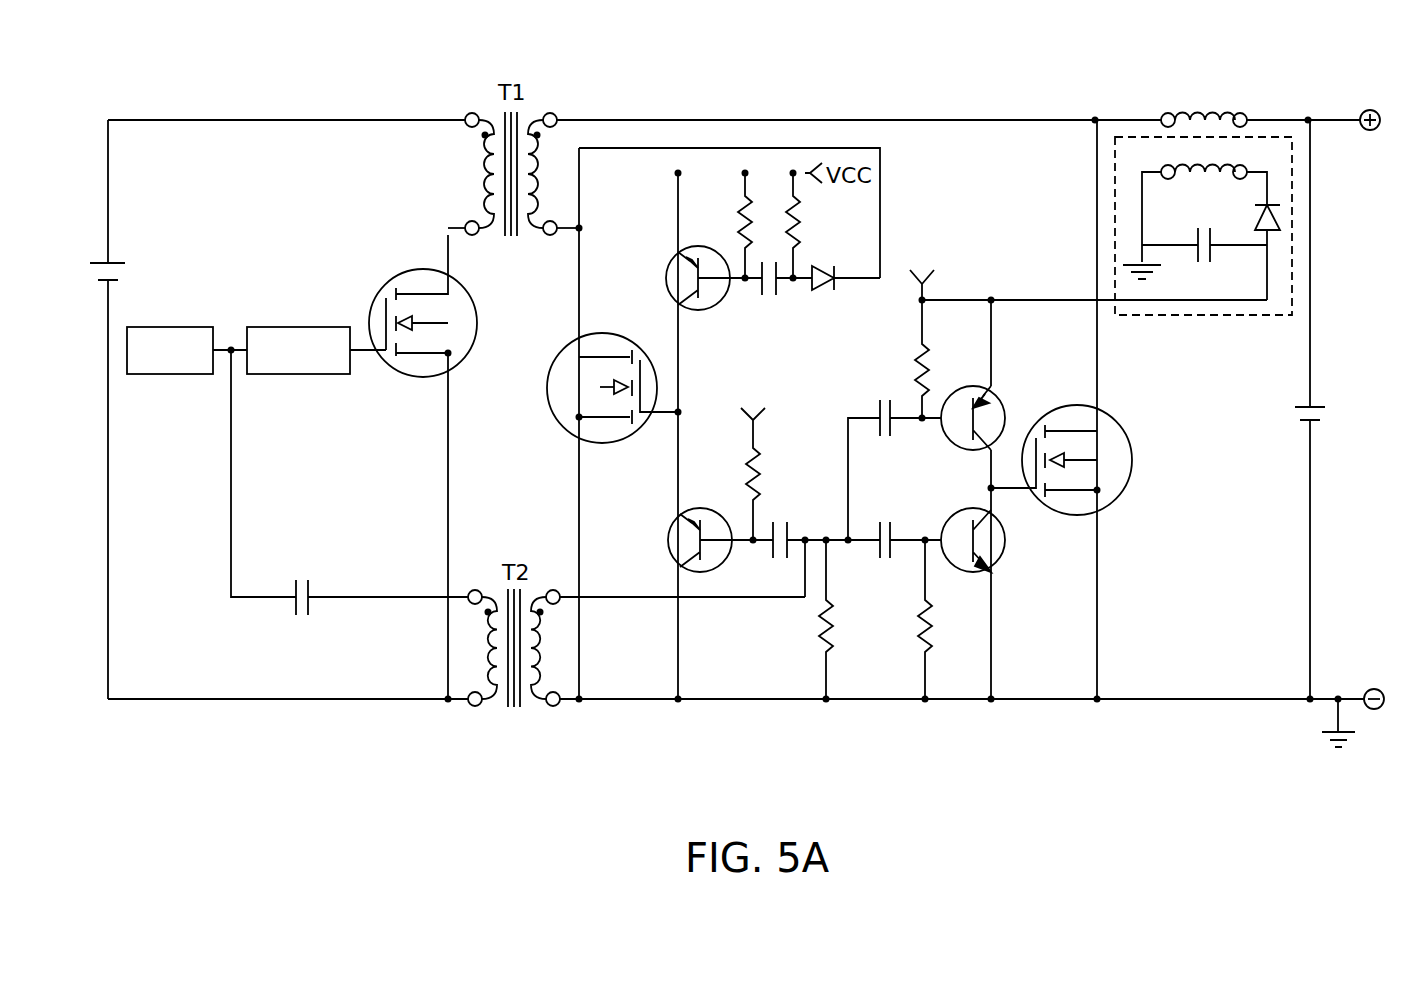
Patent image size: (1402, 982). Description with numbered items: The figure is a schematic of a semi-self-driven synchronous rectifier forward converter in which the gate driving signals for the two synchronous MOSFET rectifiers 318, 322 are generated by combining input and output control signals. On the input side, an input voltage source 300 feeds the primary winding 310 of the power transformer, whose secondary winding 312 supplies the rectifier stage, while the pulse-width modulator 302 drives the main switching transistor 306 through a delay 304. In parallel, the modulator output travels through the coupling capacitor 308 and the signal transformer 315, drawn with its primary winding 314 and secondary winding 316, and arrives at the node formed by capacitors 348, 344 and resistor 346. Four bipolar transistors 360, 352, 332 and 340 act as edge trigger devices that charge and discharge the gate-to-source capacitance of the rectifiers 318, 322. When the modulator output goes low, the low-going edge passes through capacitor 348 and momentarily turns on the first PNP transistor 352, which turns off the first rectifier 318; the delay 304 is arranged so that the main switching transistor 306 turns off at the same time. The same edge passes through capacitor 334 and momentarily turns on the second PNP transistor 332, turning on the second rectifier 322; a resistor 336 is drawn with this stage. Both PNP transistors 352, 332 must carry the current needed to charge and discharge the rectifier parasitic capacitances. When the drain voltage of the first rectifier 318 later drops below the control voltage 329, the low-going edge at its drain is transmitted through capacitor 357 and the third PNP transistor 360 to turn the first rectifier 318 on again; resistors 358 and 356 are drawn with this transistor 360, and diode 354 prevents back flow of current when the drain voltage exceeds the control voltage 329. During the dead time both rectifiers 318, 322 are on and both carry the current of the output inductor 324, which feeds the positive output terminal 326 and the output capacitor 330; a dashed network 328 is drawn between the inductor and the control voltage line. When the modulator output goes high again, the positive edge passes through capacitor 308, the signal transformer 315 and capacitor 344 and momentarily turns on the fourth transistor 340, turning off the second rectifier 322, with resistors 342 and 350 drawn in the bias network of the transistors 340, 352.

The input voltage source VIN 300 is at (135, 265).
The PWM 302 is at (167, 380).
The delay 304 is at (298, 380).
The transistor Q1 306 is at (400, 266).
The capacitor C1 308 is at (300, 624).
The primary winding of transformer T1 310 is at (466, 106).
The secondary winding of transformer T1 312 is at (554, 106).
The primary winding of transformer T2 314 is at (470, 714).
The transformer T2 315 is at (514, 714).
The secondary winding of transformer T2 316 is at (560, 714).
The synchronous MOSFET rectifier Q2 318 is at (570, 440).
The synchronous MOSFET rectifier Q3 322 is at (1110, 406).
The inductor 324 is at (1161, 106).
The positive output terminal 326 is at (1362, 106).
The auxiliary winding circuit 328 is at (1113, 178).
The control voltage Vcc 329 is at (1262, 304).
The output capacitor CO 330 is at (1320, 394).
The PNP transistor Q6 332 is at (1000, 388).
The capacitor 334 is at (878, 446).
The resistor 336 is at (938, 356).
The transistor Q7 340 is at (1006, 568).
The resistor 342 is at (912, 645).
The capacitor 344 is at (882, 565).
The resistor 346 is at (812, 645).
The capacitor 348 is at (782, 512).
The resistor 350 is at (762, 455).
The PNP transistor Q5 352 is at (673, 514).
The diode 354 is at (840, 295).
The resistor 356 is at (806, 226).
The capacitor 357 is at (770, 302).
The resistor 358 is at (736, 208).
The PNP transistor Q4 360 is at (670, 252).